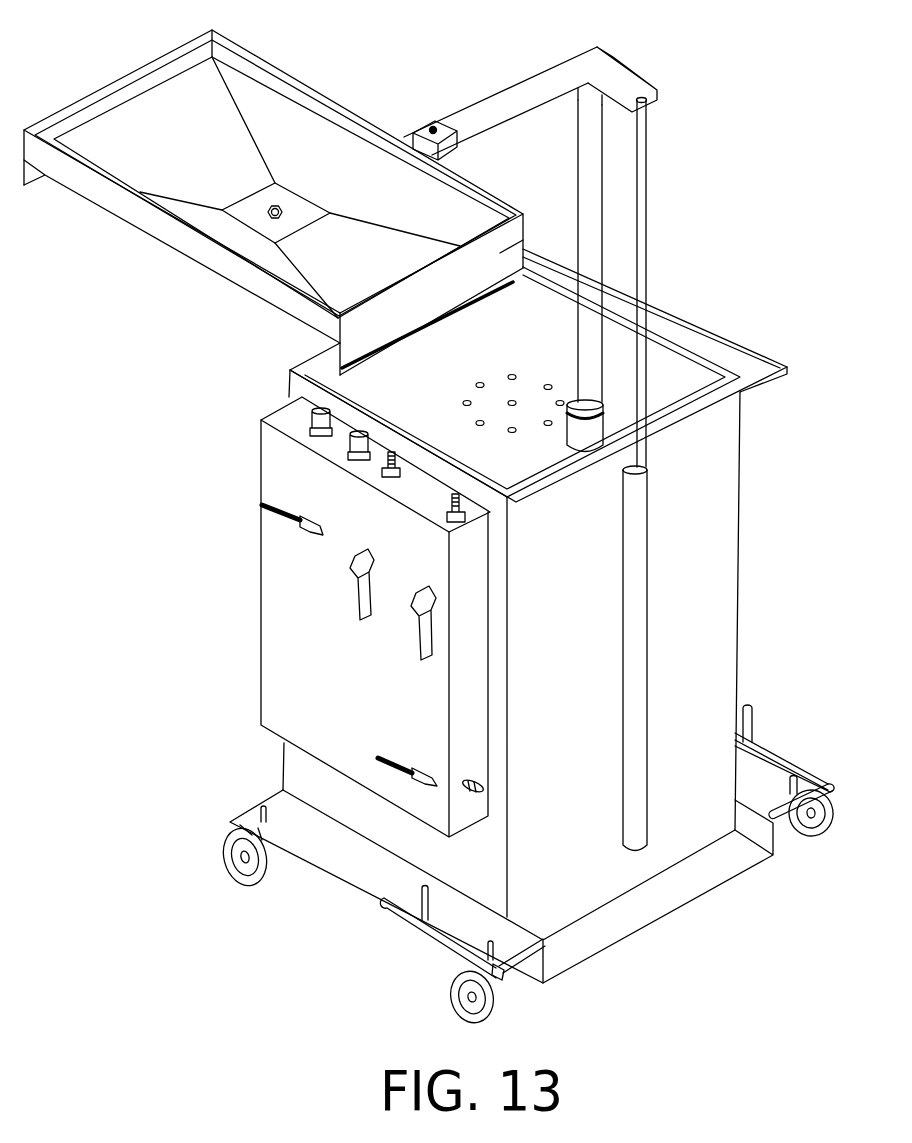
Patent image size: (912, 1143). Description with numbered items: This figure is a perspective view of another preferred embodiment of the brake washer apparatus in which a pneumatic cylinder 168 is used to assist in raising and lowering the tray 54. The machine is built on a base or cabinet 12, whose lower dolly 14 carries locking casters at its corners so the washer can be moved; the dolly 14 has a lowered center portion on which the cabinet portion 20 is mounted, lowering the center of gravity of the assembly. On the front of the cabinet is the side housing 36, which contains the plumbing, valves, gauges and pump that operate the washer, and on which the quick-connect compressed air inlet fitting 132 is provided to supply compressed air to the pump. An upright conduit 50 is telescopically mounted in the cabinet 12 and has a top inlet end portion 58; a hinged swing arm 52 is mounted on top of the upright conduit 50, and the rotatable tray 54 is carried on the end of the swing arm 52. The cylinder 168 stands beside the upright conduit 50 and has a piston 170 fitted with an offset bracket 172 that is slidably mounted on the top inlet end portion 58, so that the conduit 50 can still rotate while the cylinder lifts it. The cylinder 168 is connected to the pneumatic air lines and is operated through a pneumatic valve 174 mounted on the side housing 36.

The base or cabinet 12 is at (207, 519).
The lower dolly 14 is at (366, 884).
The cabinet portion 20 is at (740, 497).
The side housing 36 is at (275, 645).
The upright conduit 50 is at (590, 194).
The swing arm 52 is at (560, 73).
The tray 54 is at (157, 225).
The top inlet end portion 58 is at (588, 96).
The quick-connect compressed air inlet fitting 132 is at (488, 789).
The pneumatic cylinder 168 is at (640, 545).
The piston 170 is at (643, 248).
The offset bracket 172 is at (620, 80).
The pneumatic valve 174 is at (278, 525).